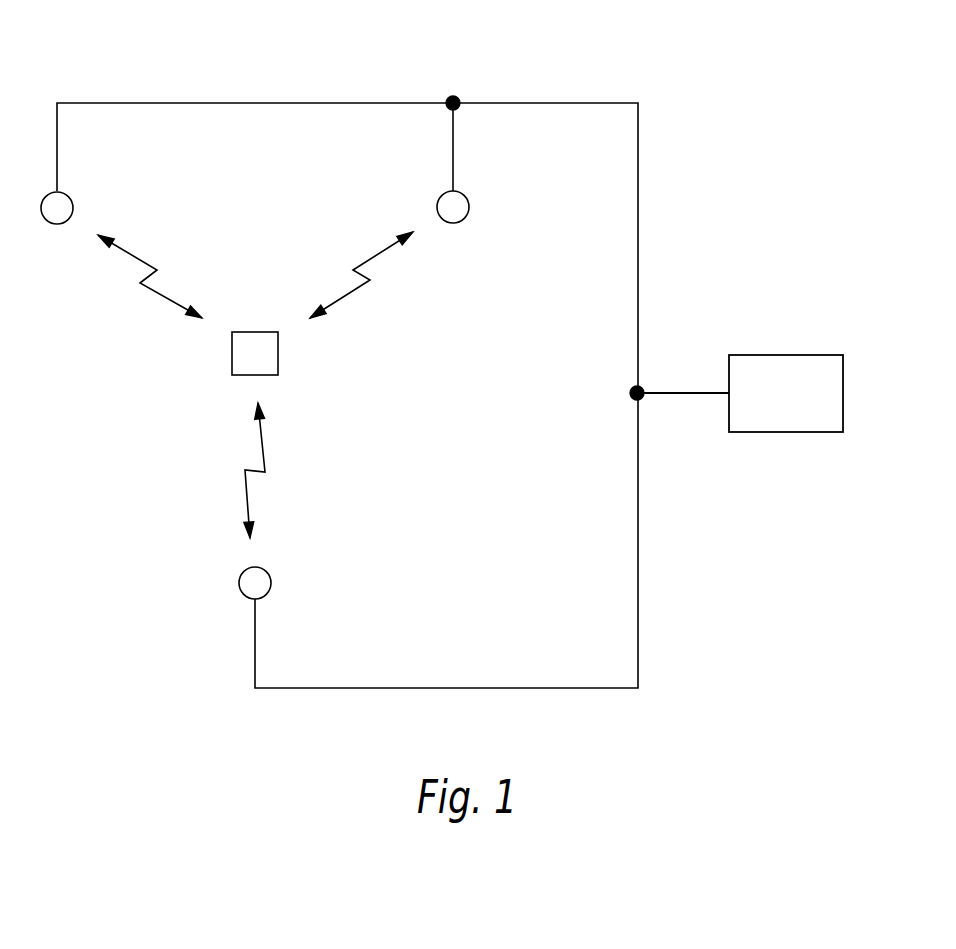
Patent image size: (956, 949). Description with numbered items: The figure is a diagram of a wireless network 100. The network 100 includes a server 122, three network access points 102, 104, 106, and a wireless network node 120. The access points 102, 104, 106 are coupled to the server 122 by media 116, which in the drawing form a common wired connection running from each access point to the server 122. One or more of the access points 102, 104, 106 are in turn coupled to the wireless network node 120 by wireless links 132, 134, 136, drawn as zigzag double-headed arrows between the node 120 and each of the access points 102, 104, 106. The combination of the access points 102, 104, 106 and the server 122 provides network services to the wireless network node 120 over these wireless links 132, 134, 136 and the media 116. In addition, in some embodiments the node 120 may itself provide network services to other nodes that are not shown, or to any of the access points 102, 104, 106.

The network 100 is at (767, 53).
The network access point 102 is at (73, 204).
The network access point 104 is at (469, 203).
The network access point 106 is at (271, 581).
The media 116 is at (638, 573).
The wireless network node 120 is at (278, 355).
The server 122 is at (822, 355).
The wireless link 132 is at (160, 292).
The wireless link 134 is at (350, 292).
The wireless link 136 is at (263, 453).